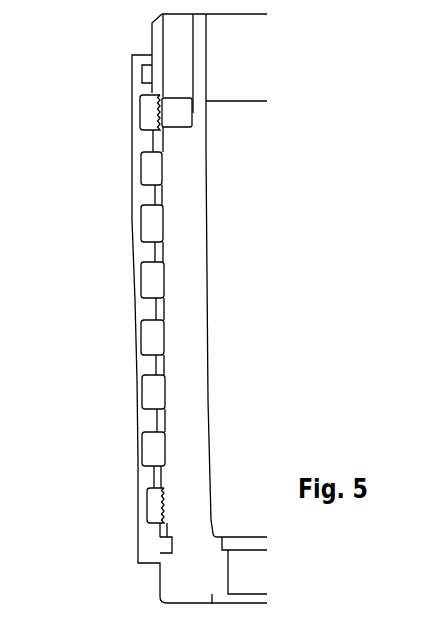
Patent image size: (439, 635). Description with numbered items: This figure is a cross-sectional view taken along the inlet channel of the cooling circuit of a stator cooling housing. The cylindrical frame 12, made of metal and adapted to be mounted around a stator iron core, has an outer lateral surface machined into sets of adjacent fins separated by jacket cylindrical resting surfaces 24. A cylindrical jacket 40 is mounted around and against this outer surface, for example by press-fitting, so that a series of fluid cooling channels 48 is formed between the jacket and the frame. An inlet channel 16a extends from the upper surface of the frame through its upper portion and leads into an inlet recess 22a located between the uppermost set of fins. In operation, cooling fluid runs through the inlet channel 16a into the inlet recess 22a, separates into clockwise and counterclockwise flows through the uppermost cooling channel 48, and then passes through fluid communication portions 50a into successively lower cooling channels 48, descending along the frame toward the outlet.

The cylindrical frame 12 is at (188, 167).
The inlet channel 16a is at (182, 47).
The inlet recess 22a is at (177, 117).
The jacket cylindrical resting surface 24 is at (160, 255).
The cylindrical jacket 40 is at (108, 258).
The fluid cooling channel 48 is at (148, 117).
The fluid communication portion 50a is at (163, 195).